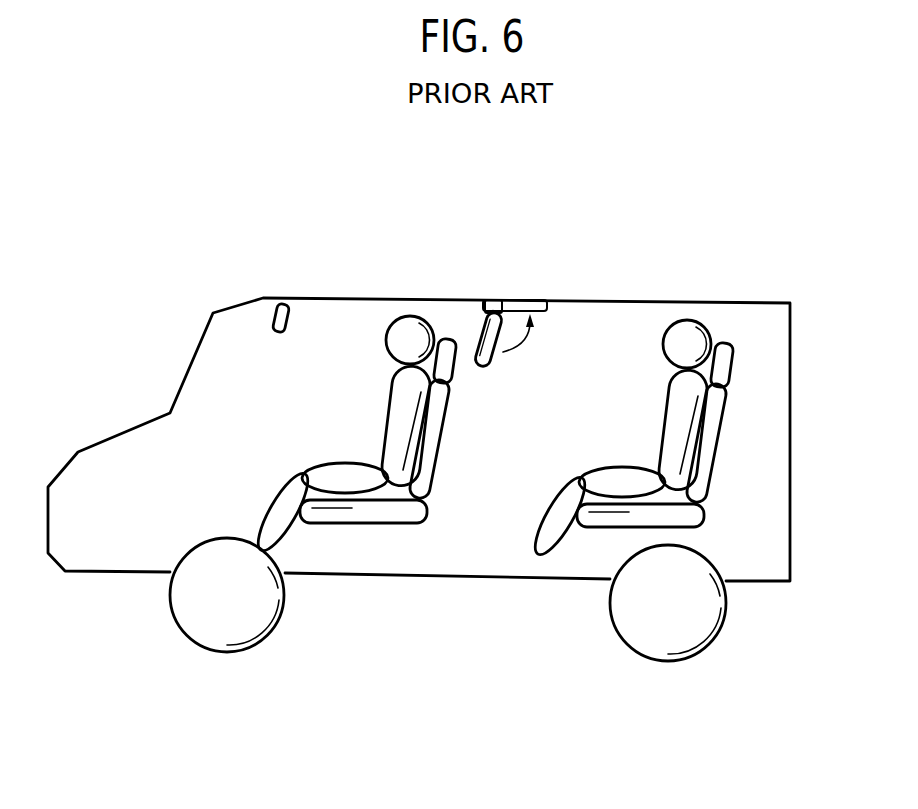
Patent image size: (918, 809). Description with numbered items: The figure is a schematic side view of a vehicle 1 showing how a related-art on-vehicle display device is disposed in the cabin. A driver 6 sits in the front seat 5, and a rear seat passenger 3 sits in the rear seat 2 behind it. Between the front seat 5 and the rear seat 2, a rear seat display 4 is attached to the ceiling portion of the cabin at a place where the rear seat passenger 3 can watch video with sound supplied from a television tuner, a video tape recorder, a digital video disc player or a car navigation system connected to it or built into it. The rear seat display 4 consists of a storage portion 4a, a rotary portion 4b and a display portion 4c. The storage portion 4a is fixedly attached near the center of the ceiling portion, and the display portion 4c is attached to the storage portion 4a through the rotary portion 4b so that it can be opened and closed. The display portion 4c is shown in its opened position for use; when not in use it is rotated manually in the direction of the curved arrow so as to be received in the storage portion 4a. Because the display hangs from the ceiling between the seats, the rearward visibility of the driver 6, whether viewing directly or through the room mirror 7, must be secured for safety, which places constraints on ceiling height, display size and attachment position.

The vehicle 1 is at (97, 444).
The rear seat 2 is at (584, 528).
The rear seat passenger 3 is at (712, 333).
The rear seat display 4 is at (508, 299).
The storage portion 4a is at (558, 302).
The rotary portion 4b is at (477, 300).
The display portion 4c is at (481, 345).
The front seat 5 is at (353, 524).
The driver 6 is at (386, 331).
The room mirror 7 is at (272, 322).